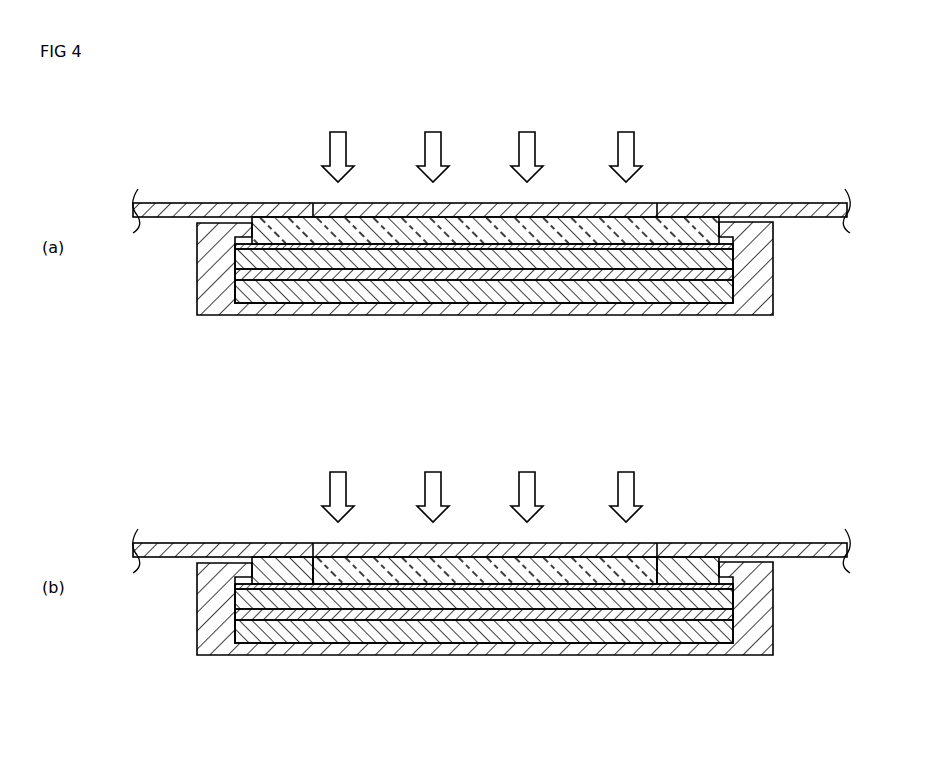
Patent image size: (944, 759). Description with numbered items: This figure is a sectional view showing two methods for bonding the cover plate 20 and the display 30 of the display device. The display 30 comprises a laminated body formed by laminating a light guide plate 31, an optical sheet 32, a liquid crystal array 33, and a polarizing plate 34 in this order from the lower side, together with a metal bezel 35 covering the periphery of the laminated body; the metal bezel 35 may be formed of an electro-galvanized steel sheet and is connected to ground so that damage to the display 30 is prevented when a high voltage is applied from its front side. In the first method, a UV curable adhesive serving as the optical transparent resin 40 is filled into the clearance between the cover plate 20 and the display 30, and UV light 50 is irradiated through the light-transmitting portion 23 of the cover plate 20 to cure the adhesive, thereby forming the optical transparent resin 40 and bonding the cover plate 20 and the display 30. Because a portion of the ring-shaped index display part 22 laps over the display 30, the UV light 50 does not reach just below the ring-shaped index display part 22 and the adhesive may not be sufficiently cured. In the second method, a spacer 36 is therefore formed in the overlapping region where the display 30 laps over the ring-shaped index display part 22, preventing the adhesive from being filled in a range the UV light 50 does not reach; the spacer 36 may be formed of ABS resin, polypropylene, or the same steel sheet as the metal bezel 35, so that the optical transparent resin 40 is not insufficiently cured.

The cover plate 20 is at (164, 203).
The ring-shaped index display part 22 is at (236, 203).
The light-transmitting portion 23 is at (638, 203).
The display 30 is at (754, 217).
The light guide plate 31 is at (597, 302).
The optical sheet 32 is at (538, 280).
The liquid crystal array 33 is at (478, 268).
The polarizing plate 34 is at (398, 247).
The metal bezel 35 is at (773, 279).
The spacer 36 is at (275, 557).
The optical transparent resin 40 is at (683, 214).
The UV light 50 is at (338, 131).